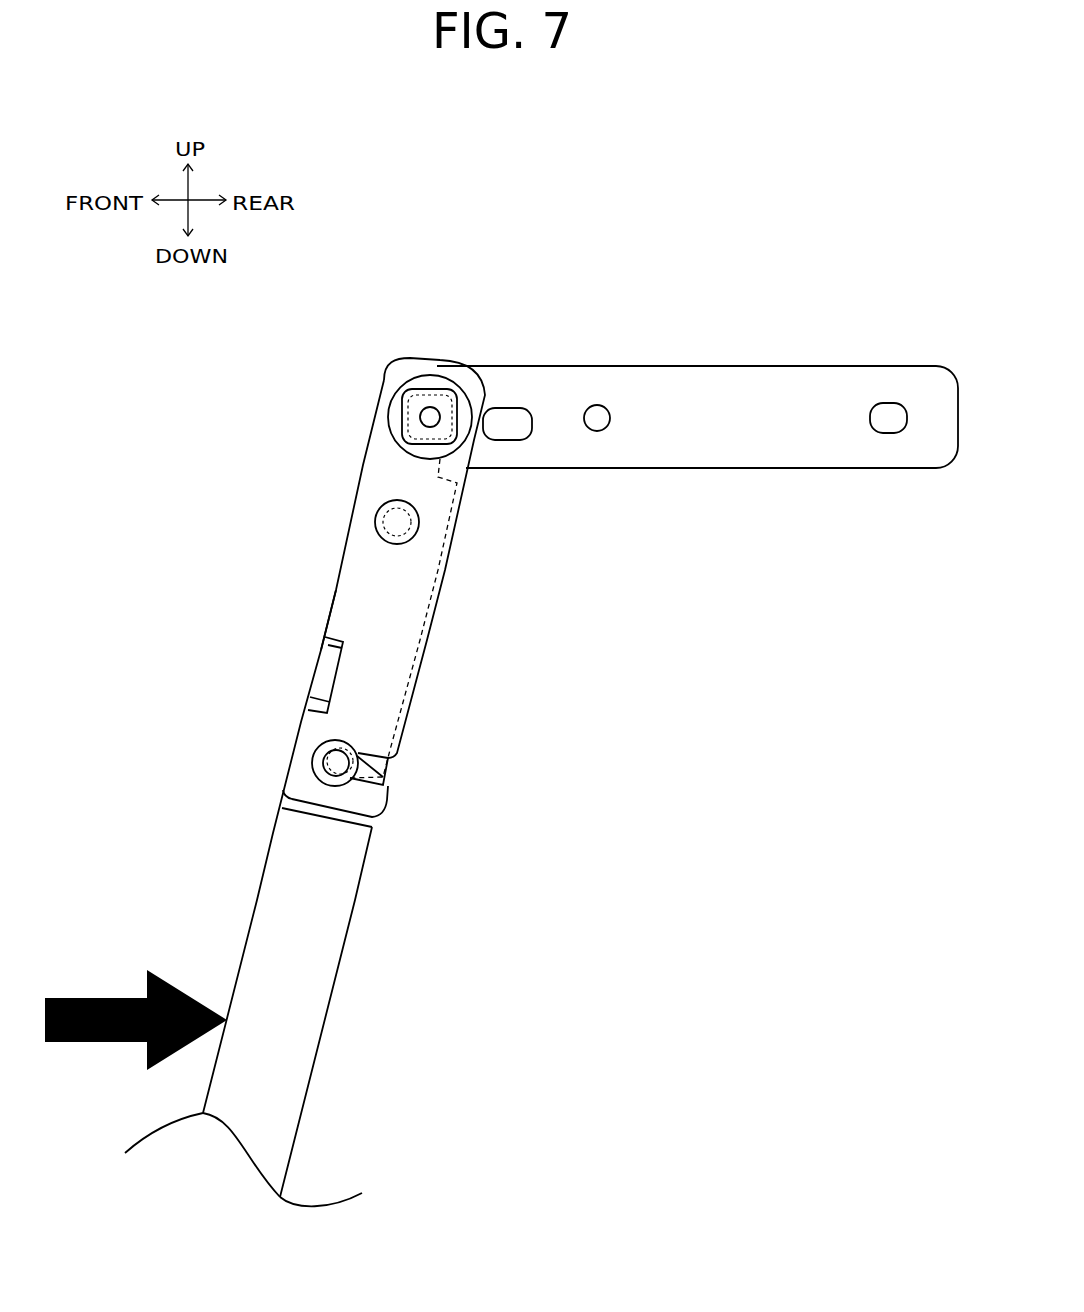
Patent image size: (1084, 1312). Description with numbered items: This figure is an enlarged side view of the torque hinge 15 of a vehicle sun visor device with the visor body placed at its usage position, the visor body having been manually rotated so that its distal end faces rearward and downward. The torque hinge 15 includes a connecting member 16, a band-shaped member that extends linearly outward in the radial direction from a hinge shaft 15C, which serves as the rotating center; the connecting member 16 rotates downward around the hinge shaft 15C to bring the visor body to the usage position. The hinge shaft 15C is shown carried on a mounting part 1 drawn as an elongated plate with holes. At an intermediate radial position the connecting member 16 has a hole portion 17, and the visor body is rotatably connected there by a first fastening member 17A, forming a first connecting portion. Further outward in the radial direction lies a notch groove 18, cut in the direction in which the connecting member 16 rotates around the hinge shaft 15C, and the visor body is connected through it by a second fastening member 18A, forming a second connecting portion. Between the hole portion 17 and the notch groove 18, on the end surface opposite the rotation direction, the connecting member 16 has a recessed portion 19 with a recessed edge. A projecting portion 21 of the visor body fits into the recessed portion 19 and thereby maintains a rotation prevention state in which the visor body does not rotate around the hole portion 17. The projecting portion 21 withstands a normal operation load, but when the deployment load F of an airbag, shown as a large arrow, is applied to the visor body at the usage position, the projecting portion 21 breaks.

The base bracket 1 is at (733, 398).
The torque hinge 15 is at (360, 463).
The hinge shaft 15C is at (428, 417).
The connecting member 16 is at (372, 598).
The hole portion 17 is at (419, 525).
The first fastening member 17A is at (375, 521).
The notch groove 18 is at (385, 779).
The second fastening member 18A is at (312, 765).
The recessed portion 19 is at (318, 686).
The projecting portion 21 is at (323, 667).
The deployment load F is at (93, 997).